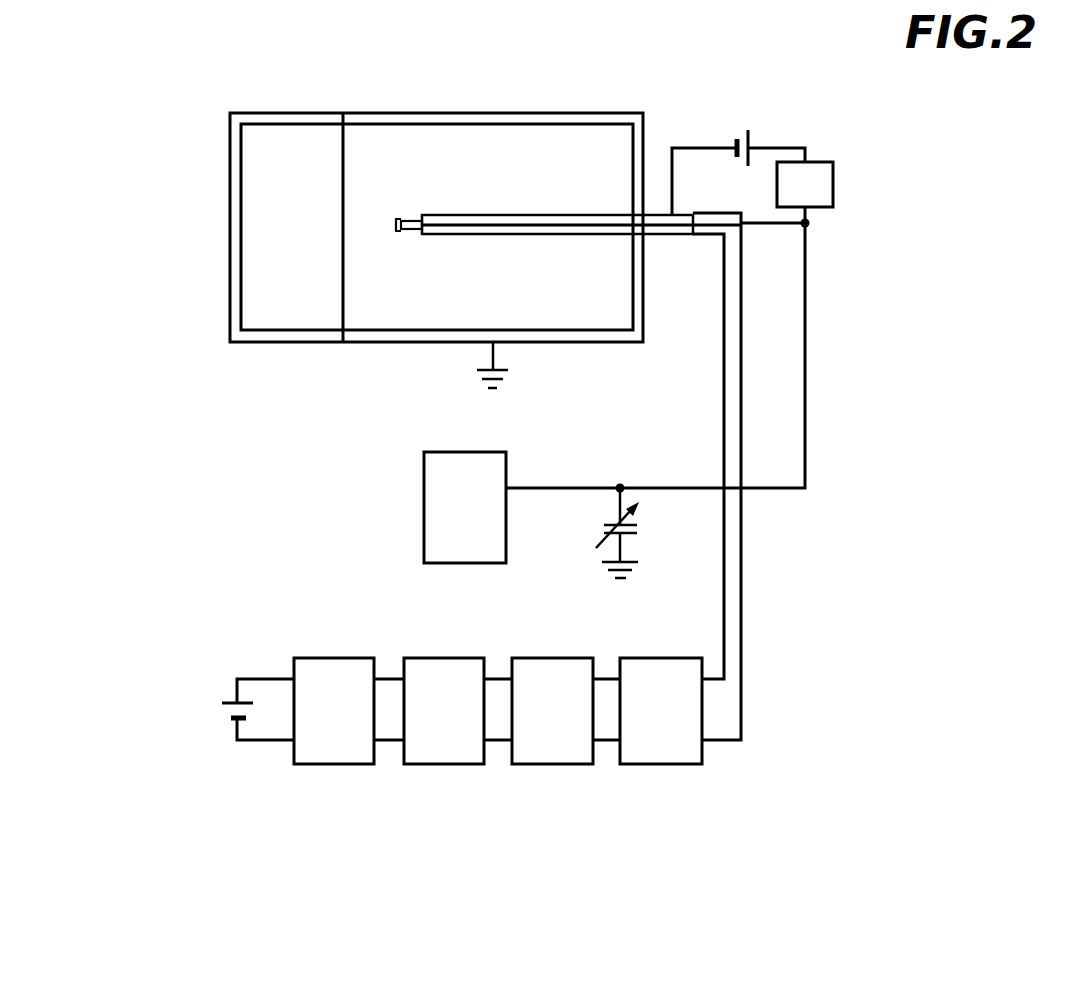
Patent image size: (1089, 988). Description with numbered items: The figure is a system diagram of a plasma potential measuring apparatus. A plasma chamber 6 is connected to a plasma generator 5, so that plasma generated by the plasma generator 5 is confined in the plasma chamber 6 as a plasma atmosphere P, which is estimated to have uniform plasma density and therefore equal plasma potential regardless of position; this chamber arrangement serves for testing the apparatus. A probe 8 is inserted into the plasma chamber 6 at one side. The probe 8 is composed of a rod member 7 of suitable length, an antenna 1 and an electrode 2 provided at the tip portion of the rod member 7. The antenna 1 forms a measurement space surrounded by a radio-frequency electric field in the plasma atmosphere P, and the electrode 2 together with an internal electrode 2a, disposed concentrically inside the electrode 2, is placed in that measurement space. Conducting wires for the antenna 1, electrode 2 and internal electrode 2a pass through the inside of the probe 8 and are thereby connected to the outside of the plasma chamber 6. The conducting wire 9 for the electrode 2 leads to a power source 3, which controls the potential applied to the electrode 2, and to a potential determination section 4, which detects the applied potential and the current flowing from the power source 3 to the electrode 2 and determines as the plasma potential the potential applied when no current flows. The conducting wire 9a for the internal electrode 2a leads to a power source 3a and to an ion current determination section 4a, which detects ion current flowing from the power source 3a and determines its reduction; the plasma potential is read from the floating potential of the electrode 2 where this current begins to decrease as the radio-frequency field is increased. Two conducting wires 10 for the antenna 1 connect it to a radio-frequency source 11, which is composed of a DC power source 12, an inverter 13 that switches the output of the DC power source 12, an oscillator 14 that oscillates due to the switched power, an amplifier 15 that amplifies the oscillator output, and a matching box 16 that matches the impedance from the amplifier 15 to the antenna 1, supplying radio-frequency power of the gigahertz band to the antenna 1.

The antenna 1 is at (410, 218).
The electrode 2 is at (420, 214).
The internal electrode 2a is at (405, 232).
The power source 3 is at (584, 565).
The power source 3a is at (756, 142).
The potential determination section 4 is at (424, 537).
The ion current determination section 4a is at (833, 183).
The plasma generator 5 is at (258, 343).
The plasma chamber 6 is at (377, 343).
The rod member 7 is at (531, 214).
The probe 8 is at (533, 254).
The conducting wire 9 is at (763, 223).
The conducting wire 9a is at (673, 148).
The conducting wires 10 is at (742, 388).
The radio-frequency source 11 is at (800, 636).
The DC power source 12 is at (226, 697).
The inverter 13 is at (330, 765).
The oscillator 14 is at (439, 765).
The amplifier 15 is at (545, 765).
The matching box 16 is at (668, 765).
The plasma atmosphere P is at (613, 315).